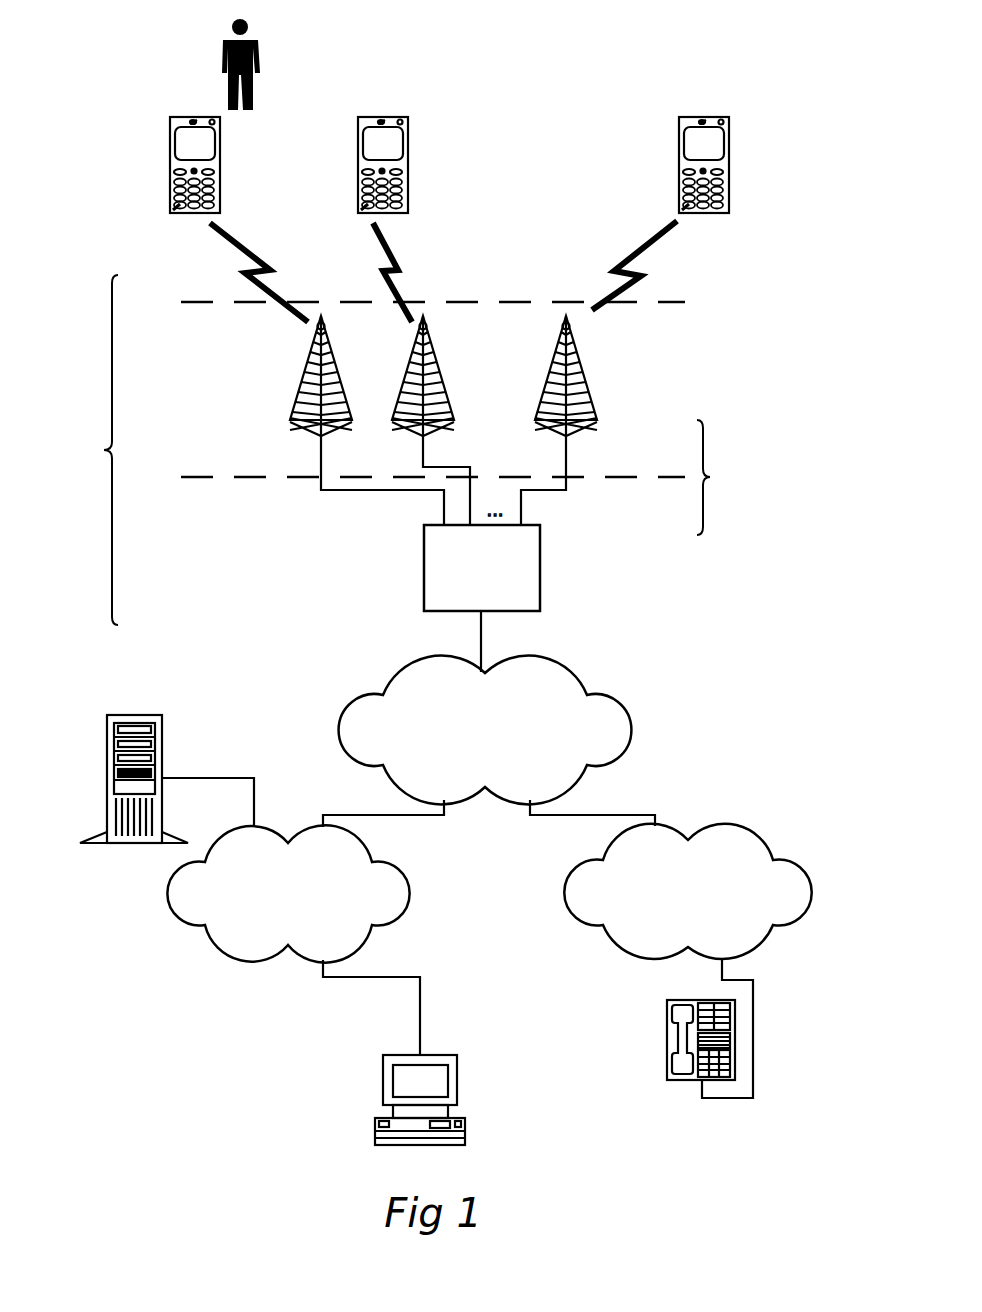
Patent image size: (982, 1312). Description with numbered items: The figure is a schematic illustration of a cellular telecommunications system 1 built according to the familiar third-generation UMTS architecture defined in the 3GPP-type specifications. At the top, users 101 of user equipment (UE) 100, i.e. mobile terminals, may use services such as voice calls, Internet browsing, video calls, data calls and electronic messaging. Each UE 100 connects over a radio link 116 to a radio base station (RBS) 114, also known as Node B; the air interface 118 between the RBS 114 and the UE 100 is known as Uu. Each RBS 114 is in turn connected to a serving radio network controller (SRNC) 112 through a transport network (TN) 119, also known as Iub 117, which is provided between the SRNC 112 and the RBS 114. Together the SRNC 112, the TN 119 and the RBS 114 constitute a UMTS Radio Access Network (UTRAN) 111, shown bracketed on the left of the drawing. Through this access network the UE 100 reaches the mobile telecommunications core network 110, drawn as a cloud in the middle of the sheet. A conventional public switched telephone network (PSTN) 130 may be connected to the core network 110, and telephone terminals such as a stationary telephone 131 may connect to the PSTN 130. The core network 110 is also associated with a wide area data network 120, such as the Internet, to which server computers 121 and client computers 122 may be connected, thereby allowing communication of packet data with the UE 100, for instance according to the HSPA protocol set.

The cellular telecommunications system 1 is at (560, 72).
The user 101 is at (254, 46).
The user equipment 100 is at (174, 178).
The radio link 116 is at (253, 256).
The air interface 118 is at (144, 296).
The radio base station 114 is at (297, 404).
The Iub 117 is at (144, 474).
The UMTS Radio Access Network 111 is at (40, 405).
The transport network 119 is at (744, 465).
The serving radio network controller 112 is at (464, 563).
The mobile telecommunications core network 110 is at (469, 715).
The server computer 121 is at (160, 722).
The wide area data network 120 is at (271, 876).
The public switched telephone network 130 is at (672, 888).
The client computer 122 is at (437, 1068).
The stationary telephone 131 is at (683, 1040).